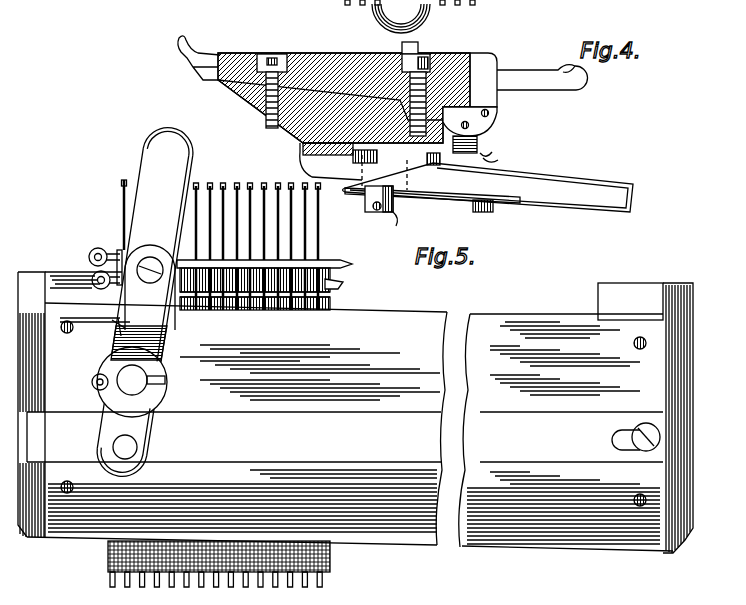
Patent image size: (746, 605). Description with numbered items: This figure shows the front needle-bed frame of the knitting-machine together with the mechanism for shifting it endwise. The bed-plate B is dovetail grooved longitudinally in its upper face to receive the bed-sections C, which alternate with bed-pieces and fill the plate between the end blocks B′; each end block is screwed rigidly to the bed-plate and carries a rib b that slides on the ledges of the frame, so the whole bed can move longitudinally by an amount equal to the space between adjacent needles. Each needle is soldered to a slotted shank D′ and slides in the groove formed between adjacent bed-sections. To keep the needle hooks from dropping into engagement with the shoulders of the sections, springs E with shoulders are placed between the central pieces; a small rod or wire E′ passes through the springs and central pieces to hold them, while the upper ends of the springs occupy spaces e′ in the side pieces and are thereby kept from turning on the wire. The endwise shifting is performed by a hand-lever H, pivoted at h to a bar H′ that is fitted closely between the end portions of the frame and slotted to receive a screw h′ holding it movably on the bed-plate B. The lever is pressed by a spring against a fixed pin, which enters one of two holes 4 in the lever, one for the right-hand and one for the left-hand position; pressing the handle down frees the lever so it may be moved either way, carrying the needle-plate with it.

In FIG. 4, the hand-lever H is at (488, 106).
In FIG. 5, the hand-lever H is at (141, 302).
In FIG. 4, the end blocks B′ is at (321, 56).
In FIG. 5, the end blocks B′ is at (85, 271).
In FIG. 4, the shank D′ is at (527, 71).
In FIG. 5, the shank D′ is at (226, 230).
In FIG. 4, the rod or wire E′ is at (469, 127).
In FIG. 5, the rod or wire E′ is at (337, 259).
In FIG. 4, the holes 4 is at (490, 151).
In FIG. 5, the holes 4 is at (118, 321).
In FIG. 4, the pivot h is at (399, 161).
In FIG. 5, the pivot h is at (177, 333).
In FIG. 4, the bar H′ is at (300, 152).
In FIG. 5, the bar H′ is at (345, 437).
In FIG. 5, the rib b is at (363, 412).
In FIG. 5, the bed-plate B is at (350, 427).
In FIG. 5, the screw h′ is at (645, 424).
In FIG. 5, the springs E is at (200, 312).
In FIG. 5, the spaces e′ is at (317, 302).
In FIG. 5, the bed-sections C is at (112, 549).